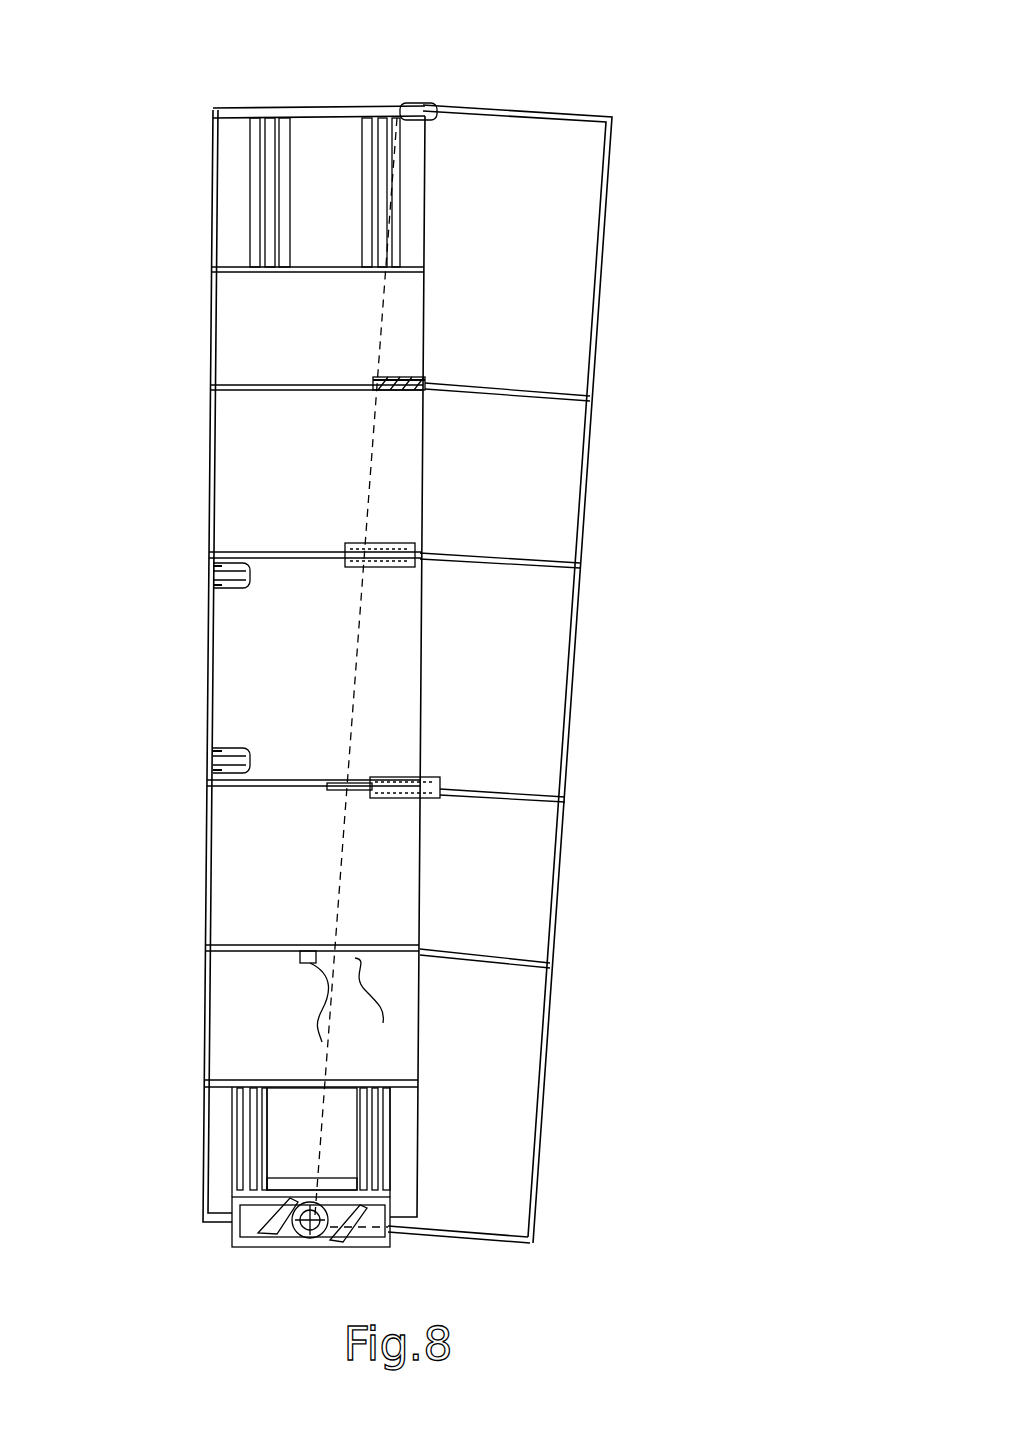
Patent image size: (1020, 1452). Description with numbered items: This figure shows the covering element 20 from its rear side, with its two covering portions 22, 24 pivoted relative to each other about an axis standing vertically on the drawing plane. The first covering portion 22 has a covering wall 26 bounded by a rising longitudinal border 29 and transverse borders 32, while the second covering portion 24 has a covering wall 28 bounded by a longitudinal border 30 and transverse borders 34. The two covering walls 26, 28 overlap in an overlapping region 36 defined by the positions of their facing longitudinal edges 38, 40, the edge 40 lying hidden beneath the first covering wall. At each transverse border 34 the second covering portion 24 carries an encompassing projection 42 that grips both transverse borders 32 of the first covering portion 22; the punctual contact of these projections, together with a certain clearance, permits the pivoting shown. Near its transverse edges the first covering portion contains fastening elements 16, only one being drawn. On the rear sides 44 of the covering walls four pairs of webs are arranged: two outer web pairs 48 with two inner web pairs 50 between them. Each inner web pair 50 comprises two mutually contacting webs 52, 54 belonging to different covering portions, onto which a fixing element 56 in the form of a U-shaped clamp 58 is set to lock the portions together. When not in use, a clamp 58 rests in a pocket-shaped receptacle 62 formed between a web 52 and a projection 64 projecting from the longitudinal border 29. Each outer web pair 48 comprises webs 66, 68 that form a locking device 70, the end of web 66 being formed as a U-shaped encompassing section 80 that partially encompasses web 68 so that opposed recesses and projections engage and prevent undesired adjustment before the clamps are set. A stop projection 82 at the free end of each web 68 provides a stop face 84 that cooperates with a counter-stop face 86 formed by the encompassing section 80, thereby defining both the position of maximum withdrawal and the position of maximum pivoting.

The fastening element 16 is at (268, 1275).
The covering element 20 is at (728, 152).
The first covering portion 22 is at (183, 527).
The second covering portion 24 is at (655, 496).
The covering wall 26 is at (255, 464).
The covering wall 28 is at (560, 452).
The longitudinal border 29 is at (207, 645).
The longitudinal border 30 is at (574, 701).
The transverse border 32 is at (334, 108).
The transverse border 34 is at (562, 116).
The overlapping region 36 is at (485, 380).
The longitudinal edge 38 is at (440, 311).
The longitudinal edge 40 is at (383, 306).
The encompassing projection 42 is at (433, 112).
The rear side 44 is at (298, 686).
The outer web pair 48 is at (530, 362).
The inner web pair 50 is at (512, 569).
The web 52 is at (291, 553).
The web 54 is at (509, 555).
The fixing element 56 is at (437, 524).
The clamp 58 is at (421, 579).
The receptacle 62 is at (268, 580).
The projection 64 is at (233, 586).
The web 66 is at (296, 385).
The web 68 is at (556, 398).
The locking device 70 is at (517, 356).
The encompassing section 80 is at (410, 378).
The stop projection 82 is at (378, 380).
The stop face 84 is at (314, 1016).
The counter-stop face 86 is at (377, 1006).